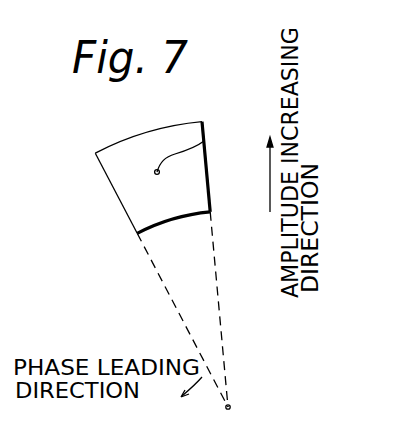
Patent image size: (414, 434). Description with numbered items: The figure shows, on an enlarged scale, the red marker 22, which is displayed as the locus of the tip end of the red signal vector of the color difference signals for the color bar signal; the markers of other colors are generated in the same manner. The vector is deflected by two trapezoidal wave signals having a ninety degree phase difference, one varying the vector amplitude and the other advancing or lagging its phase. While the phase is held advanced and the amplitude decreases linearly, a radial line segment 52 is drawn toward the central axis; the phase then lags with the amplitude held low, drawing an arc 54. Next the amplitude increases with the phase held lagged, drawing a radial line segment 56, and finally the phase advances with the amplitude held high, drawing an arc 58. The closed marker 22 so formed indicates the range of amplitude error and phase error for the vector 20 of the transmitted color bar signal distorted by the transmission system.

The vector 20 is at (204, 141).
The marker 22 is at (88, 140).
The radial line segment 52 is at (116, 195).
The arc 54 is at (172, 219).
The radial line segment 56 is at (206, 165).
The arc 58 is at (157, 129).